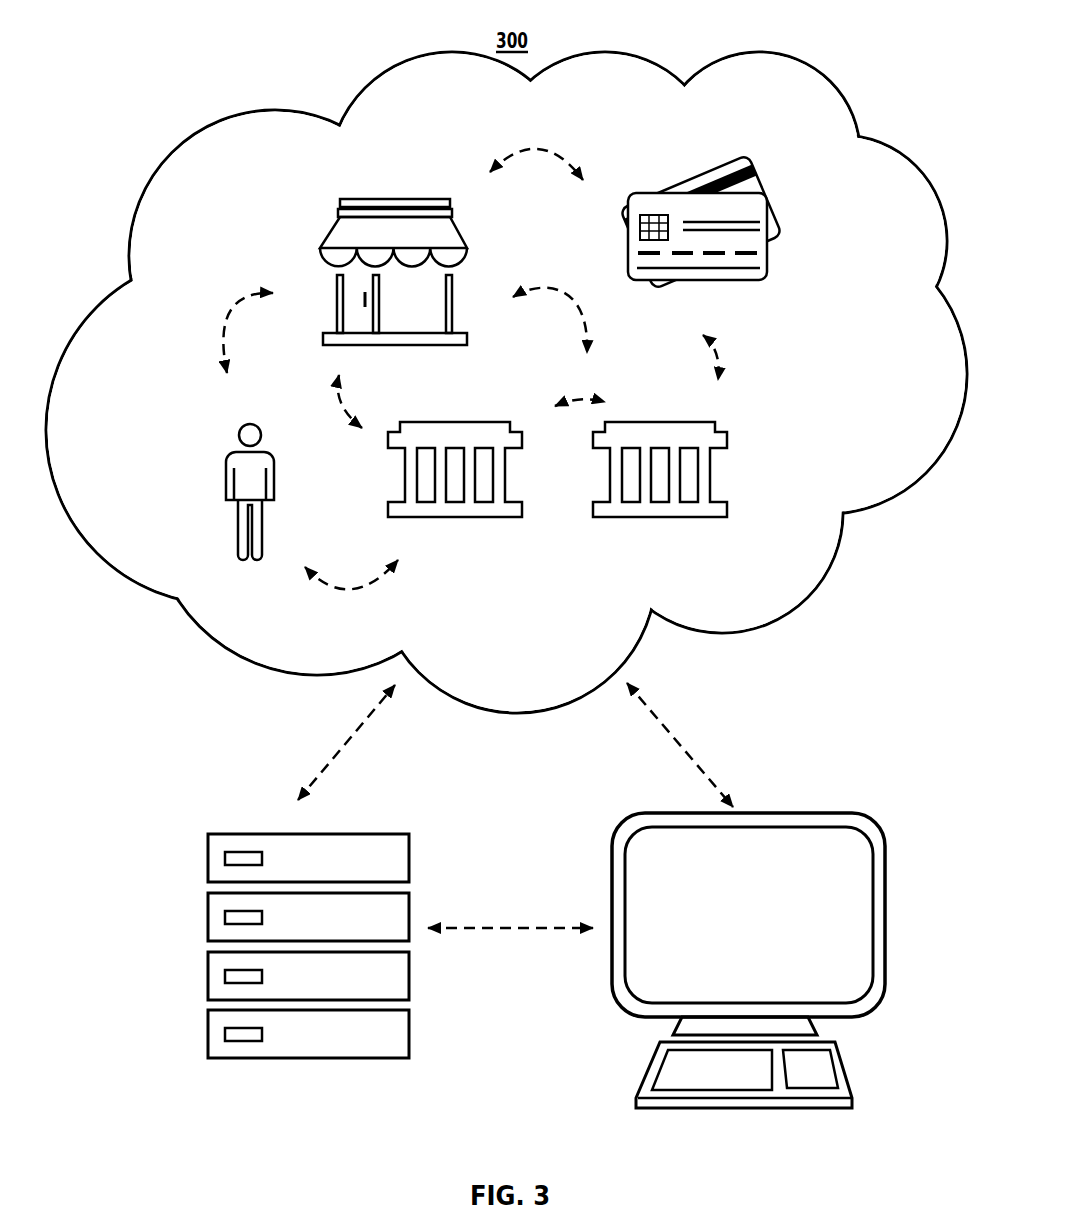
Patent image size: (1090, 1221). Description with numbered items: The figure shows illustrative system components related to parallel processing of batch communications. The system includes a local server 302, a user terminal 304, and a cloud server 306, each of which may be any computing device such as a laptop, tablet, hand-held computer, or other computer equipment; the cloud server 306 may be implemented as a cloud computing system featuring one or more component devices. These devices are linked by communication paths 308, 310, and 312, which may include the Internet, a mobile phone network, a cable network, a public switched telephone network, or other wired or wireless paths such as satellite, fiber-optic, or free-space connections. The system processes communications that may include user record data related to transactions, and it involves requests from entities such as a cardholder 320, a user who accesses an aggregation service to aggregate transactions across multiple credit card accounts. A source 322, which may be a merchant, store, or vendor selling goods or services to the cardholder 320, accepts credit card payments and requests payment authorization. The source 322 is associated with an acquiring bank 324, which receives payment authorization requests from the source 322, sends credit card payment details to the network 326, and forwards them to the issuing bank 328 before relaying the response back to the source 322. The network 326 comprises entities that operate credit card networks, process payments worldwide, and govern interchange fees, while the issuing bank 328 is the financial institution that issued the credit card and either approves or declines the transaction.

The local server 302 is at (249, 897).
The user terminal 304 is at (748, 924).
The cloud server 306 is at (506, 382).
The communication path 308 is at (307, 733).
The communication path 310 is at (709, 729).
The communication path 312 is at (510, 883).
The cardholder 320 is at (169, 444).
The source 322 is at (333, 259).
The acquiring bank 324 is at (463, 494).
The network 326 is at (747, 265).
The issuing bank 328 is at (688, 470).